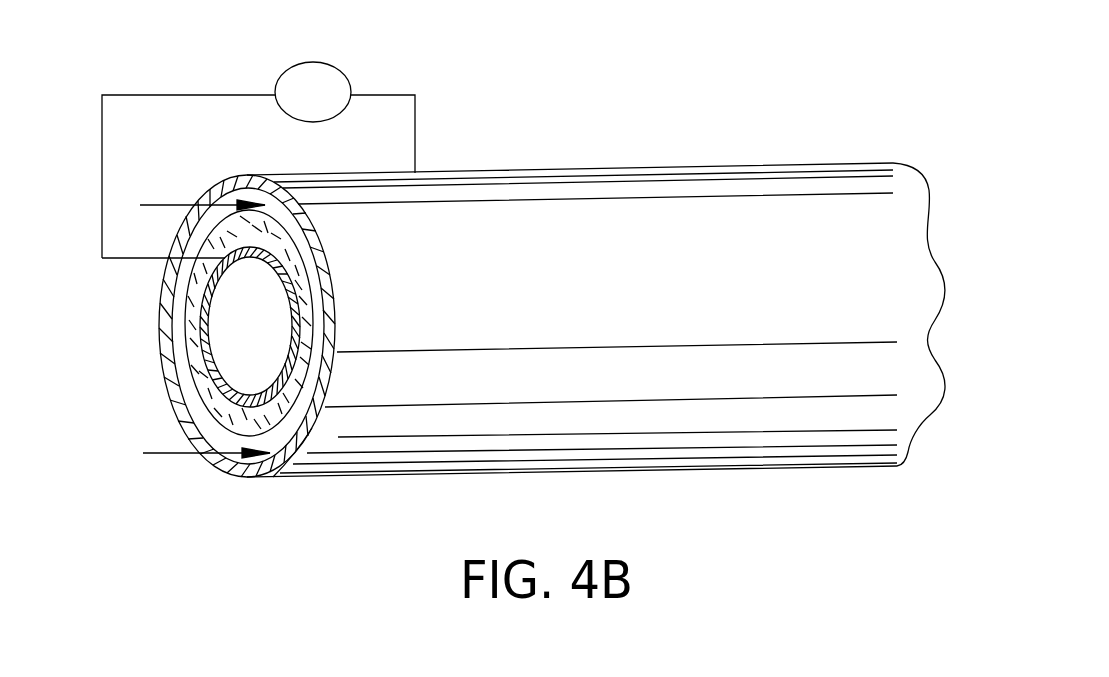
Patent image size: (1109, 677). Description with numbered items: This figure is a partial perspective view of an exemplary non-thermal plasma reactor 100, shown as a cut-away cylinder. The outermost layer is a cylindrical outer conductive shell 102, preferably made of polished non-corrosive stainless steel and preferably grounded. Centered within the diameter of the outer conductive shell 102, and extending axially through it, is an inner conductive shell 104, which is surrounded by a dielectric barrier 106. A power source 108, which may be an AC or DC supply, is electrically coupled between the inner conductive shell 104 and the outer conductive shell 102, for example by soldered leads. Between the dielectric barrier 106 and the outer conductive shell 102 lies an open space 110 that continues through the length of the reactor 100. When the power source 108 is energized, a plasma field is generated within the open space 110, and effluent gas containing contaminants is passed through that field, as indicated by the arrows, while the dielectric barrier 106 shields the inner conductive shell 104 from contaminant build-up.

The non-thermal plasma reactor 100 is at (780, 512).
The outer conductive shell 102 is at (620, 207).
The inner conductive shell 104 is at (202, 342).
The dielectric barrier 106 is at (287, 408).
The power source 108 is at (346, 68).
The open space 110 is at (205, 420).